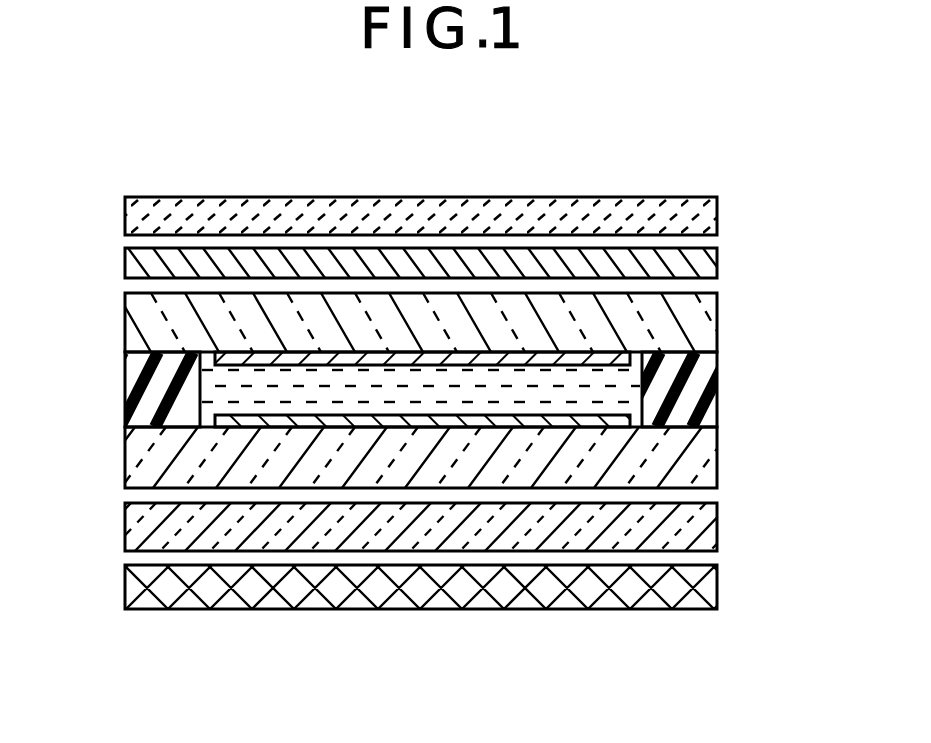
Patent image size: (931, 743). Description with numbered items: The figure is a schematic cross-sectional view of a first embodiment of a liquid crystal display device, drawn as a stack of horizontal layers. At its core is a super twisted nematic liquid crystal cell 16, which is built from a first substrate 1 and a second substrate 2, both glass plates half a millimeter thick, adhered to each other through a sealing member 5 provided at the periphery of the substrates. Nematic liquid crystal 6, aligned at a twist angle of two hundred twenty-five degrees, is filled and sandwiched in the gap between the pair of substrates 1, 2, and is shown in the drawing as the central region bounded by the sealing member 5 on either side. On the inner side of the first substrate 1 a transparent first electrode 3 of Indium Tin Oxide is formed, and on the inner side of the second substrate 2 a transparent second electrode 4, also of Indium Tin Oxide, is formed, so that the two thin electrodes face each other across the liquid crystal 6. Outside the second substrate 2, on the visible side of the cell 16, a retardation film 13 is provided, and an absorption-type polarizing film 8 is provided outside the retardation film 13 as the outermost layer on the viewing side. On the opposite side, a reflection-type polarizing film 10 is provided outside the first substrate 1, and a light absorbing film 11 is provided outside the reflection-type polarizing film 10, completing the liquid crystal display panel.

The first substrate 1 is at (125, 461).
The second substrate 2 is at (125, 321).
The first electrode 3 is at (320, 424).
The second electrode 4 is at (334, 358).
The sealing member 5 is at (125, 398).
The nematic liquid crystal 6 is at (508, 387).
The absorption-type polarizing film 8 is at (718, 202).
The reflection-type polarizing film 10 is at (718, 522).
The light absorbing film 11 is at (718, 585).
The retardation film 13 is at (718, 256).
The STN liquid crystal cell 16 is at (418, 396).